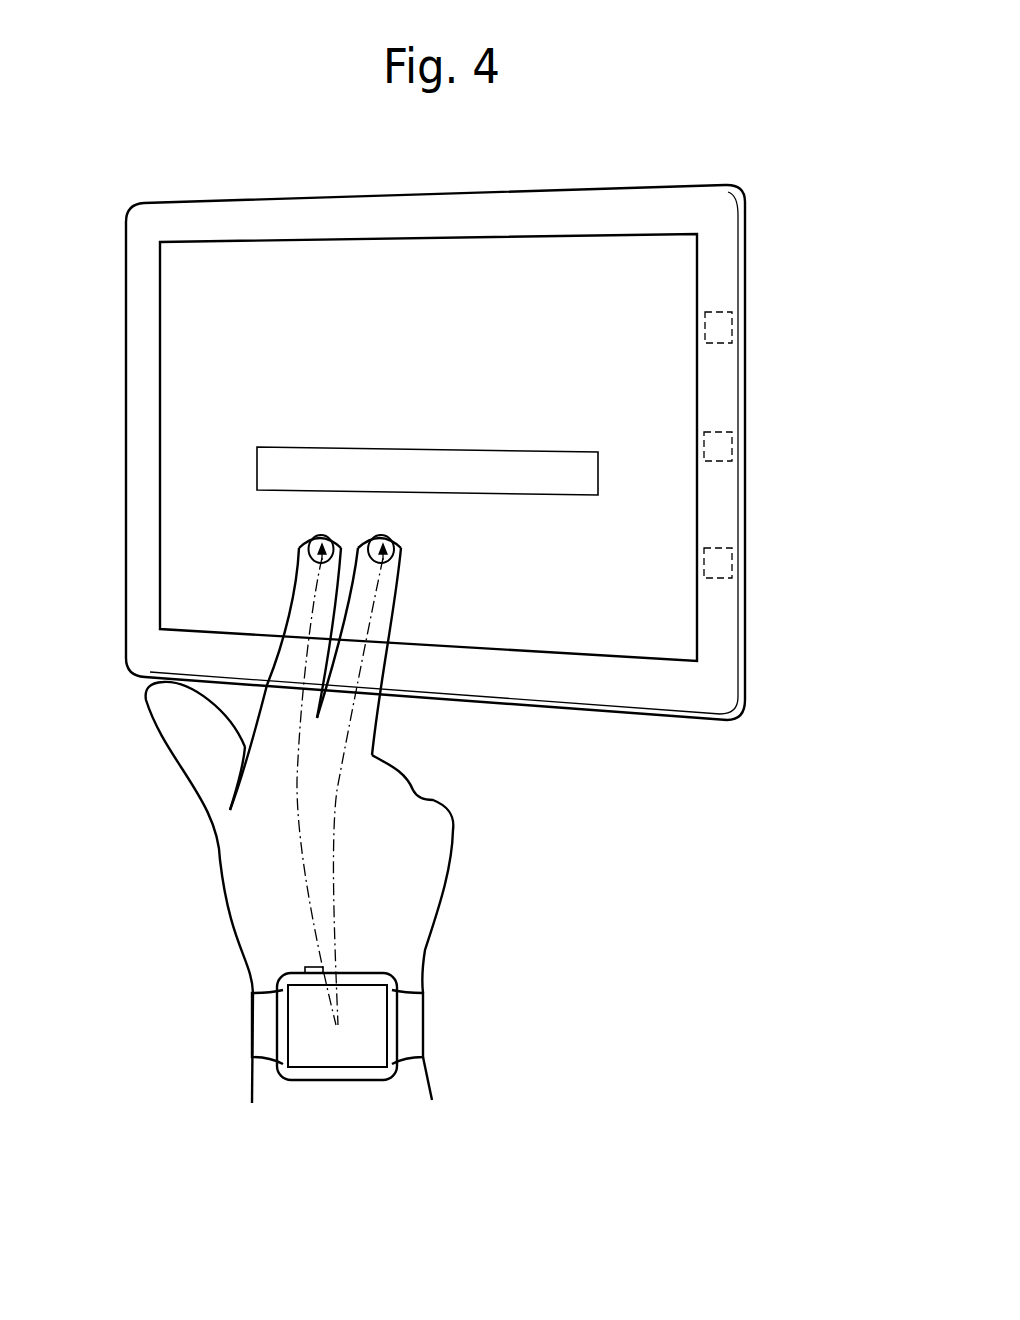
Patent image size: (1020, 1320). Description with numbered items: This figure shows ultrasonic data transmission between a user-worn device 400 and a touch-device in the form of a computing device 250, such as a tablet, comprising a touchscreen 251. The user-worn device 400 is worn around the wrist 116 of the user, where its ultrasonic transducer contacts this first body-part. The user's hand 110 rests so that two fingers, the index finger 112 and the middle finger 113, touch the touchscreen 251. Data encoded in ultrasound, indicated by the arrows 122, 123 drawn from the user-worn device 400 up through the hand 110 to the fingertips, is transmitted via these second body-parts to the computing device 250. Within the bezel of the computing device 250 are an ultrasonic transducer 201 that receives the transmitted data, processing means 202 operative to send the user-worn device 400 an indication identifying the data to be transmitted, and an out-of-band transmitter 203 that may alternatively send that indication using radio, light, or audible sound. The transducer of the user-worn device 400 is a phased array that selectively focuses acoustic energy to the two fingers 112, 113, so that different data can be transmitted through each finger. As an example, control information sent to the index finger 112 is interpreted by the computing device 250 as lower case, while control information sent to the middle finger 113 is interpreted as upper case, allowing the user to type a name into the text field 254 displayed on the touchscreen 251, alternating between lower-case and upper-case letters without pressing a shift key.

The computing device 250 is at (780, 182).
The touchscreen 251 is at (165, 392).
The text field 254 is at (256, 470).
The ultrasonic transducer 201 is at (727, 440).
The processing means 202 is at (722, 322).
The out-of-band transmitter 203 is at (722, 565).
The index finger 112 is at (290, 593).
The middle finger 113 is at (385, 597).
The ultrasound 122 is at (297, 853).
The ultrasound 123 is at (335, 793).
The hand 110 is at (412, 918).
The wrist 116 is at (263, 983).
The user-worn device 400 is at (337, 1100).